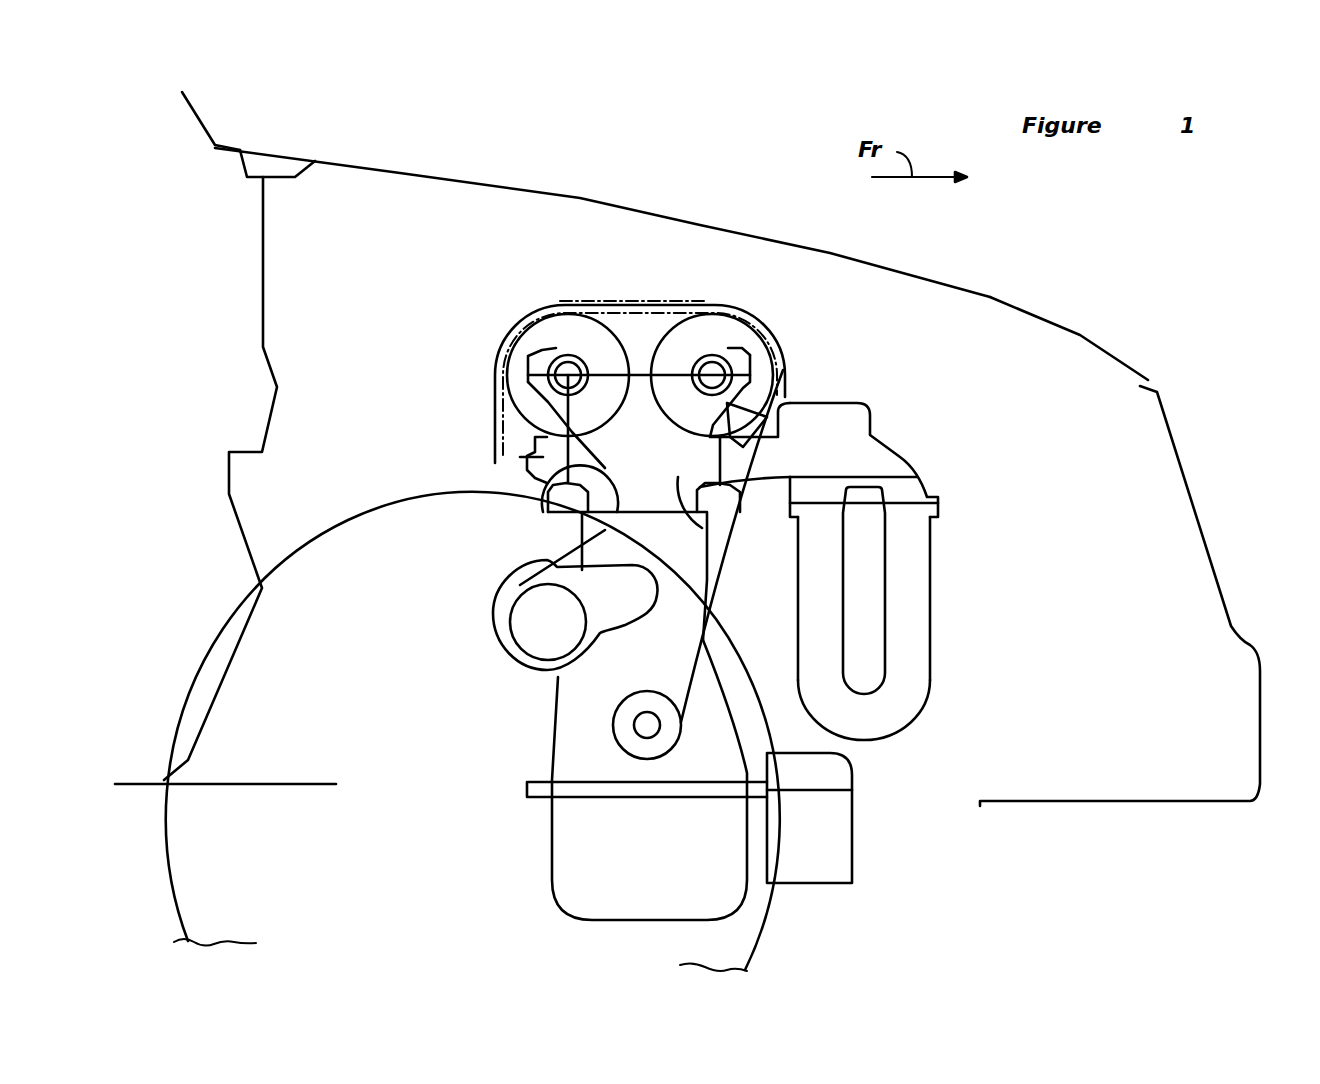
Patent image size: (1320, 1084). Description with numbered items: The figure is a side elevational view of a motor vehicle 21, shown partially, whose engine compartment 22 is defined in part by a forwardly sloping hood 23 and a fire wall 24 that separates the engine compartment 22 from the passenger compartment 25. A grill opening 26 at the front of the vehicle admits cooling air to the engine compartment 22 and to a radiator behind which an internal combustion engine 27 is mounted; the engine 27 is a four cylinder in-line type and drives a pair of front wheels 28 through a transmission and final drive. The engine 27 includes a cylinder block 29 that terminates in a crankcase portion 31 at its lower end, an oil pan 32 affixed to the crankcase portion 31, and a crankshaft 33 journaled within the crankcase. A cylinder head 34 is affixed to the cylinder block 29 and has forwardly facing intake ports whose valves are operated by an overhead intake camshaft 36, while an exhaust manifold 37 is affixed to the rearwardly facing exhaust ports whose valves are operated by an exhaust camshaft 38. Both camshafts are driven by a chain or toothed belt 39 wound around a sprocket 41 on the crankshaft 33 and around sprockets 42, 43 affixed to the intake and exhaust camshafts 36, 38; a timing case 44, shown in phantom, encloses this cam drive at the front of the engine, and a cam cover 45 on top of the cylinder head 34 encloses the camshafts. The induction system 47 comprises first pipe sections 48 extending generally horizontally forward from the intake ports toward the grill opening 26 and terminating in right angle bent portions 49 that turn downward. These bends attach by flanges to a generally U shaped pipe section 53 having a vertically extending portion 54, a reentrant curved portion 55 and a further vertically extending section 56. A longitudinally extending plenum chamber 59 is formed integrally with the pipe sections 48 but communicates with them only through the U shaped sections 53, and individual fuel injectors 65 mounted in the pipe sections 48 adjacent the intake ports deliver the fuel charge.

The motor vehicle 21 is at (513, 183).
The engine compartment 22 is at (1002, 431).
The hood 23 is at (990, 297).
The fire wall 24 is at (263, 272).
The passenger compartment 25 is at (150, 319).
The grill opening 26 is at (1200, 503).
The internal combustion engine 27 is at (683, 243).
The front wheels 28 is at (419, 505).
The cylinder block 29 is at (597, 550).
The crankcase portion 31 is at (567, 740).
The oil pan 32 is at (598, 900).
The crankshaft 33 is at (647, 732).
The cylinder head 34 is at (700, 527).
The intake camshaft 36 is at (712, 375).
The exhaust manifold 37 is at (527, 455).
The exhaust camshaft 38 is at (568, 375).
The chain or toothed belt 39 is at (540, 683).
The sprocket 41 is at (668, 703).
The sprocket 42 is at (652, 404).
The sprocket 43 is at (503, 350).
The timing case 44 is at (724, 302).
The cam cover 45 is at (640, 342).
The induction system 47 is at (868, 372).
The first pipe sections 48 is at (778, 482).
The right angle bent portions 49 is at (905, 480).
The U shaped pipe section 53 is at (940, 590).
The vertically extending portion 54 is at (918, 550).
The reentrant curved portion 55 is at (895, 738).
The vertically extending section 56 is at (832, 648).
The plenum chamber 59 is at (853, 430).
The fuel injectors 65 is at (765, 400).